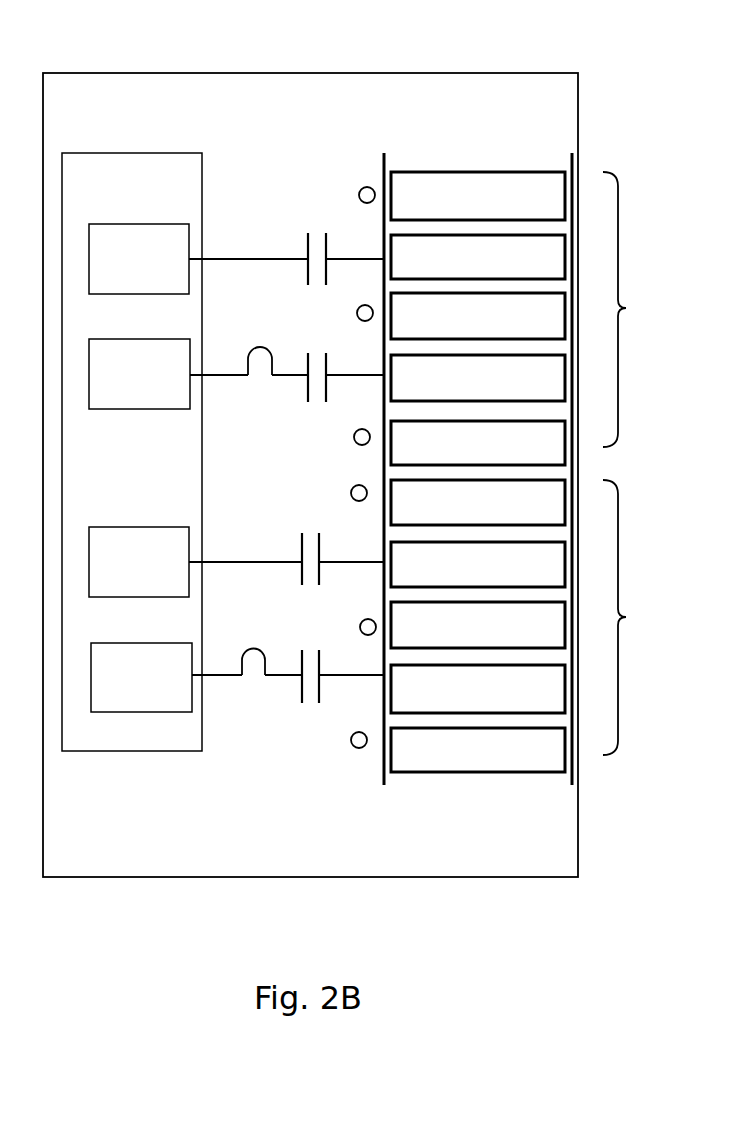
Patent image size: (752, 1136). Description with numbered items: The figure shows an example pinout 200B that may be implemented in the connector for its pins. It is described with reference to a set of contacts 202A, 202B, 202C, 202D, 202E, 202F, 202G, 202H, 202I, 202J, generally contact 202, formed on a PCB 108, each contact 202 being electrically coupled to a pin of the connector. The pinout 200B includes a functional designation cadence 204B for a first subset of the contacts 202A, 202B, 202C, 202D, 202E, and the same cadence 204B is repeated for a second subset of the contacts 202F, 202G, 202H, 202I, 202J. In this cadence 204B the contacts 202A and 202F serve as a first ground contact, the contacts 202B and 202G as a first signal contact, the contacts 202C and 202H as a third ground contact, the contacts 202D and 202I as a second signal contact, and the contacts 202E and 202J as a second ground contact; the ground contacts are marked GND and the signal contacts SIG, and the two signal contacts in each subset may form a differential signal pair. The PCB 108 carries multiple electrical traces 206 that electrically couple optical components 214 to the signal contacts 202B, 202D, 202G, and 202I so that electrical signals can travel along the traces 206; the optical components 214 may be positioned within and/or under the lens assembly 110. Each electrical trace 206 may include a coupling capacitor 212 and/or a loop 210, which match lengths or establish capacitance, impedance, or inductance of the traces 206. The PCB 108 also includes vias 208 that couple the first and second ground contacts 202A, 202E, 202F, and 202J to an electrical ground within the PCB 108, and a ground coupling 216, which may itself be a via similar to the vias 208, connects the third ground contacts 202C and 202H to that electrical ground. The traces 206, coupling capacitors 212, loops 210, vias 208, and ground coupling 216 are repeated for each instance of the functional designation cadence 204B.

The pinout 200B is at (202, 40).
The PCB 108 is at (109, 98).
The lens assembly 110 is at (132, 452).
The contact 202 is at (455, 149).
The contact 202A is at (478, 196).
The contact 202B is at (478, 257).
The contact 202C is at (478, 316).
The contact 202D is at (478, 378).
The contact 202E is at (478, 443).
The contact 202F is at (478, 502).
The contact 202G is at (478, 564).
The contact 202H is at (478, 625).
The contact 202I is at (478, 689).
The contact 202J is at (478, 750).
The functional designation cadence 204B is at (653, 463).
The electrical trace 206 is at (221, 372).
The via 208 is at (358, 185).
The loop 210 is at (265, 356).
The coupling capacitor 212 is at (303, 278).
The optical component 214 is at (140, 468).
The ground coupling 216 is at (354, 309).